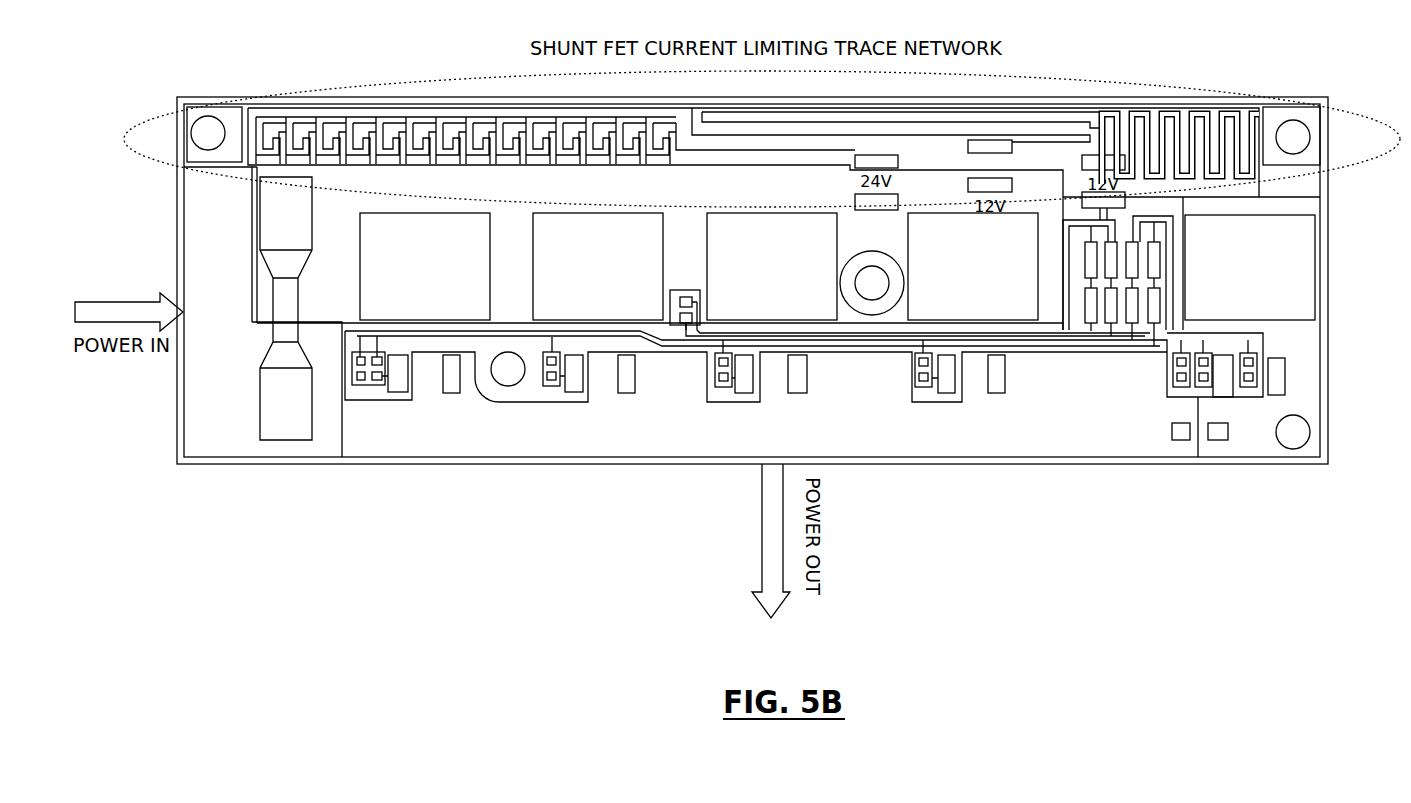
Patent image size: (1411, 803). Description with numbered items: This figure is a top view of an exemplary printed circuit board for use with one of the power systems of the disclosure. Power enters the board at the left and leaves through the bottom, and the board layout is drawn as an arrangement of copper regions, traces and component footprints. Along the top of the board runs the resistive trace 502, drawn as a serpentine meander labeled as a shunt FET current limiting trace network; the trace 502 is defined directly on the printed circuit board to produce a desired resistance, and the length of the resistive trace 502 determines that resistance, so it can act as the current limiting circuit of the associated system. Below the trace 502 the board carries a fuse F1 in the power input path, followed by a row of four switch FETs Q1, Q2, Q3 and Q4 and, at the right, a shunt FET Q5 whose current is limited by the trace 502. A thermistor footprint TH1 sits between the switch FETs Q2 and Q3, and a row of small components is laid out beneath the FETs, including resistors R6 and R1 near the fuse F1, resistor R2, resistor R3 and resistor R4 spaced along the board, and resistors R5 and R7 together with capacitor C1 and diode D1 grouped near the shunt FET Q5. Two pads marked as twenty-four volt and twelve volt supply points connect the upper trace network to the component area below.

The resistive trace 502 is at (450, 74).
The fuse F1 is at (286, 308).
The switch FET Q1 is at (411, 266).
The switch FET Q2 is at (585, 266).
The switch FET Q3 is at (758, 266).
The switch FET Q4 is at (959, 266).
The shunt FET Q5 is at (1250, 267).
The thermistor TH1 is at (686, 297).
The resistor R1 is at (380, 383).
The resistor R2 is at (552, 386).
The resistor R3 is at (723, 387).
The resistor R4 is at (925, 387).
The resistor R5 is at (1177, 372).
The resistor R6 is at (362, 383).
The resistor R7 is at (1197, 387).
The capacitor C1 is at (1249, 387).
The diode D1 is at (1185, 437).